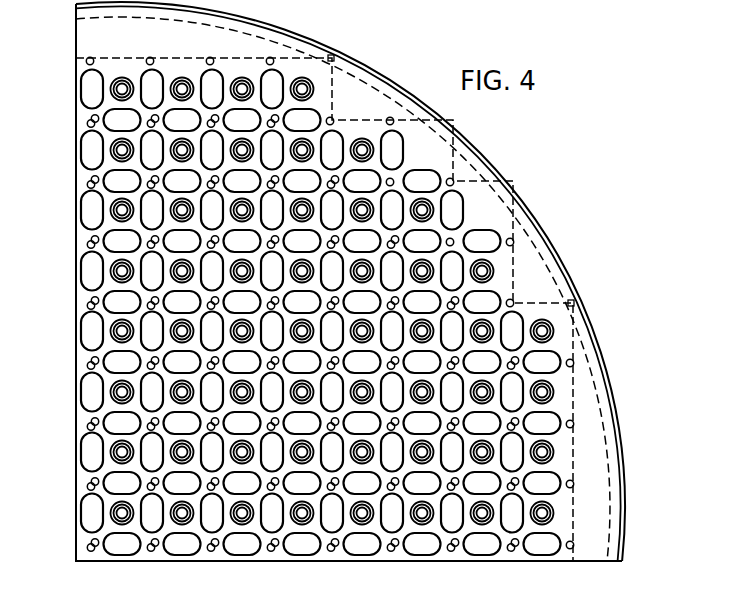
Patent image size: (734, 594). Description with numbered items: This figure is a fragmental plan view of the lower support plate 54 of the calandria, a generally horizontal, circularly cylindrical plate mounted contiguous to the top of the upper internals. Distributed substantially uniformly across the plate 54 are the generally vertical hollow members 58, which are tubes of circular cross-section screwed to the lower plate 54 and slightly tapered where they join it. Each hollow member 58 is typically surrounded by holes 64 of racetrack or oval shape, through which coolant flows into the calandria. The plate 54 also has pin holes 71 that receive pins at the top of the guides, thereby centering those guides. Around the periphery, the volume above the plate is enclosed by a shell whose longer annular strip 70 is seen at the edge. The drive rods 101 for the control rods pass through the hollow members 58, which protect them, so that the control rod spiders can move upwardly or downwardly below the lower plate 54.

The lower support plate 54 is at (587, 408).
The hollow members 58 is at (366, 140).
The holes 64 is at (86, 146).
The longer annular strip 70 is at (473, 155).
The pin holes 71 is at (86, 424).
The drive rods 101 is at (183, 84).